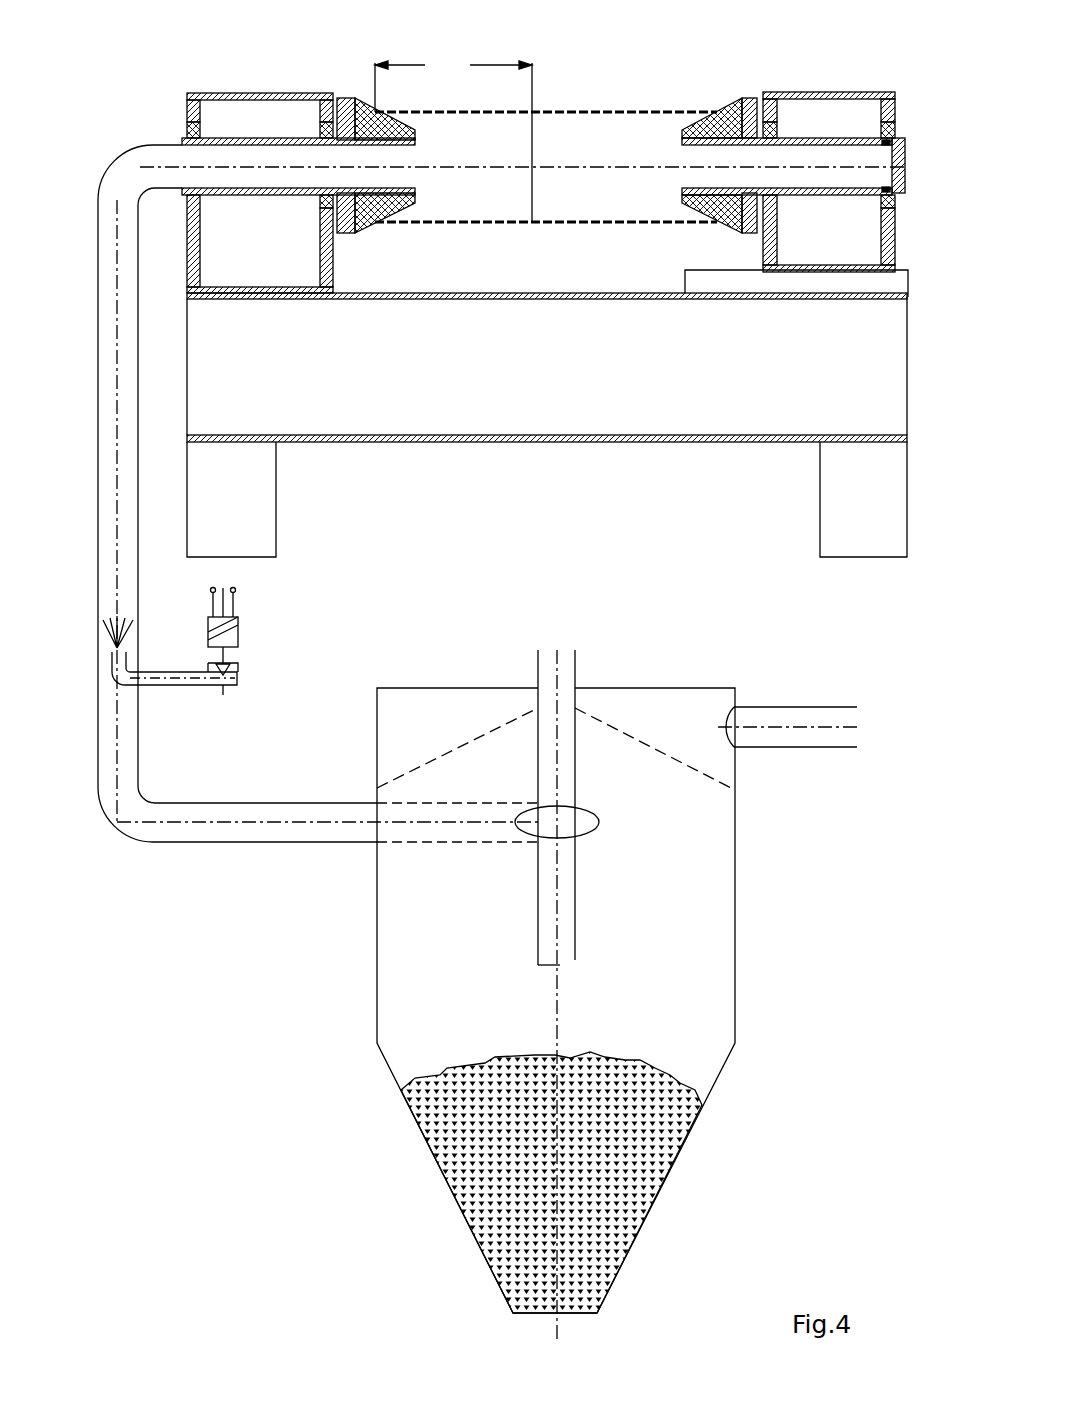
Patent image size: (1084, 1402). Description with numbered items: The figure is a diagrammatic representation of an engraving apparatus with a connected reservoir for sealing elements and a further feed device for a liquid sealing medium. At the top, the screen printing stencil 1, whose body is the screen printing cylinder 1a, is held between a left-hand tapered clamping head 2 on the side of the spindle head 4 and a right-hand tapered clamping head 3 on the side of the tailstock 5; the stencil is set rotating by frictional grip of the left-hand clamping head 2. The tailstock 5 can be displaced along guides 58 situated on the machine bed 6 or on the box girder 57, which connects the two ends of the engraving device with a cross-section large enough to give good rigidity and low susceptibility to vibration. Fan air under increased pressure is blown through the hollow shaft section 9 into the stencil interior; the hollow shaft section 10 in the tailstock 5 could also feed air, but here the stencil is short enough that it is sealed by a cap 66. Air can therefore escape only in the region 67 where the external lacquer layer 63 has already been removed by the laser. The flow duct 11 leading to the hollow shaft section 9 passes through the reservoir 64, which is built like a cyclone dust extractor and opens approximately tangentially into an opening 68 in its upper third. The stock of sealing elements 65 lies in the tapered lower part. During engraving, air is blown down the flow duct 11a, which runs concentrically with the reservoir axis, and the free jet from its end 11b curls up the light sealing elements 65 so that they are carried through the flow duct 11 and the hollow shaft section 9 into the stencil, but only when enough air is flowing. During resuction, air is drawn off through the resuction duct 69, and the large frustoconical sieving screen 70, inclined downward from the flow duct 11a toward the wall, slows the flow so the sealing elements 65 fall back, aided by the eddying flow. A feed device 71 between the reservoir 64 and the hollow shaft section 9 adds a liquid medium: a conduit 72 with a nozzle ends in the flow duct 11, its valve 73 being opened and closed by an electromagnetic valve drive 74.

The screen printing stencil 1 is at (546, 145).
The screen printing cylinder 1a is at (476, 224).
The left-hand tapered clamping head 2 is at (342, 100).
The right-hand tapered clamping head 3 is at (738, 98).
The spindle head 4 is at (258, 105).
The tailstock 5 is at (805, 92).
The machine bed 6 is at (678, 392).
The hollow shaft section 9 is at (247, 153).
The hollow shaft section 10 is at (826, 152).
The flow duct 11 is at (125, 763).
The flow duct 11a is at (563, 660).
The end of the flow duct 11b is at (563, 965).
The box girder 57 is at (620, 442).
The guides 58 is at (709, 280).
The external lacquer layer 63 is at (576, 108).
The reservoir 64 is at (364, 1145).
The sealing elements 65 is at (645, 1153).
The cap 66 is at (902, 136).
The region 67 is at (453, 137).
The opening 68 is at (590, 813).
The resuction duct 69 is at (750, 718).
The frustoconical sieving screen 70 is at (465, 742).
The feed device 71 is at (246, 709).
The conduit 72 is at (148, 680).
The valve 73 is at (232, 668).
The electromagnetic valve drive 74 is at (232, 622).